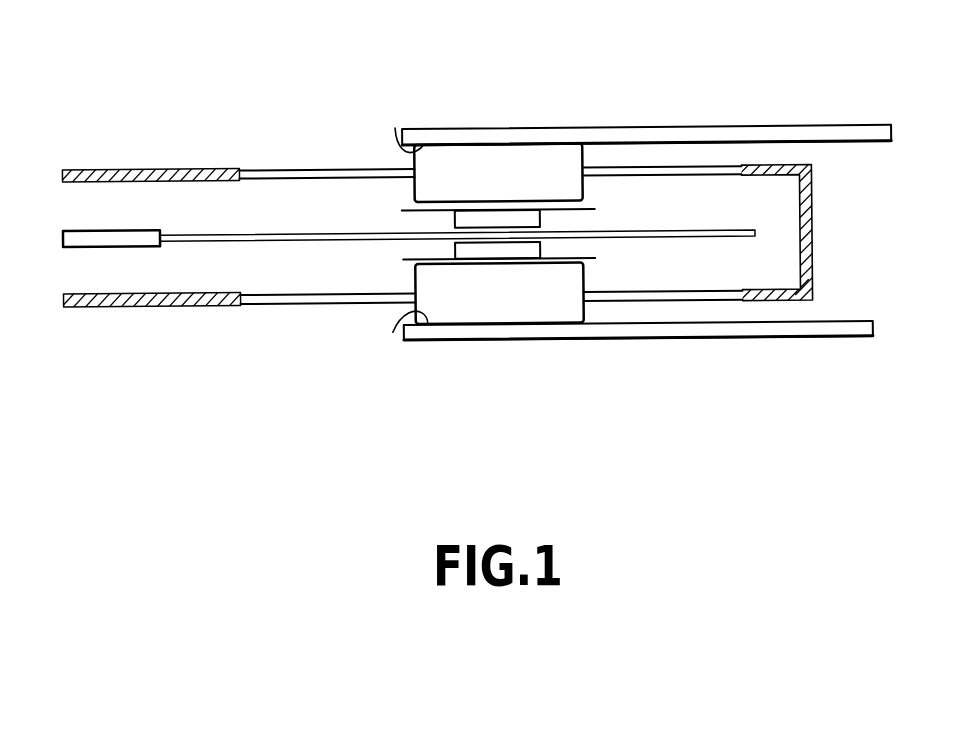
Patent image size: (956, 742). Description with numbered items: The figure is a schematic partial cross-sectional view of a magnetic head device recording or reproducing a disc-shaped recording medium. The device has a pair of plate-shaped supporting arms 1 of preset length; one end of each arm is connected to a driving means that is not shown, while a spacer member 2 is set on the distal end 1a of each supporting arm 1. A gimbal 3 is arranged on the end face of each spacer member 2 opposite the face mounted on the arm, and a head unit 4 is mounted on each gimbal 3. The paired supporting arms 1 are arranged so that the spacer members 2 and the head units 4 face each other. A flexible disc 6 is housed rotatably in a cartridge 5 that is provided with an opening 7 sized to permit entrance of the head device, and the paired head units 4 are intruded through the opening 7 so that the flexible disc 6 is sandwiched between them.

The supporting arm 1 is at (690, 131).
The distal end 1a is at (396, 128).
The spacer member 2 is at (528, 152).
The gimbal 3 is at (402, 211).
The head unit 4 is at (487, 217).
The cartridge 5 is at (165, 170).
The flexible disc 6 is at (305, 232).
The opening 7 is at (247, 168).